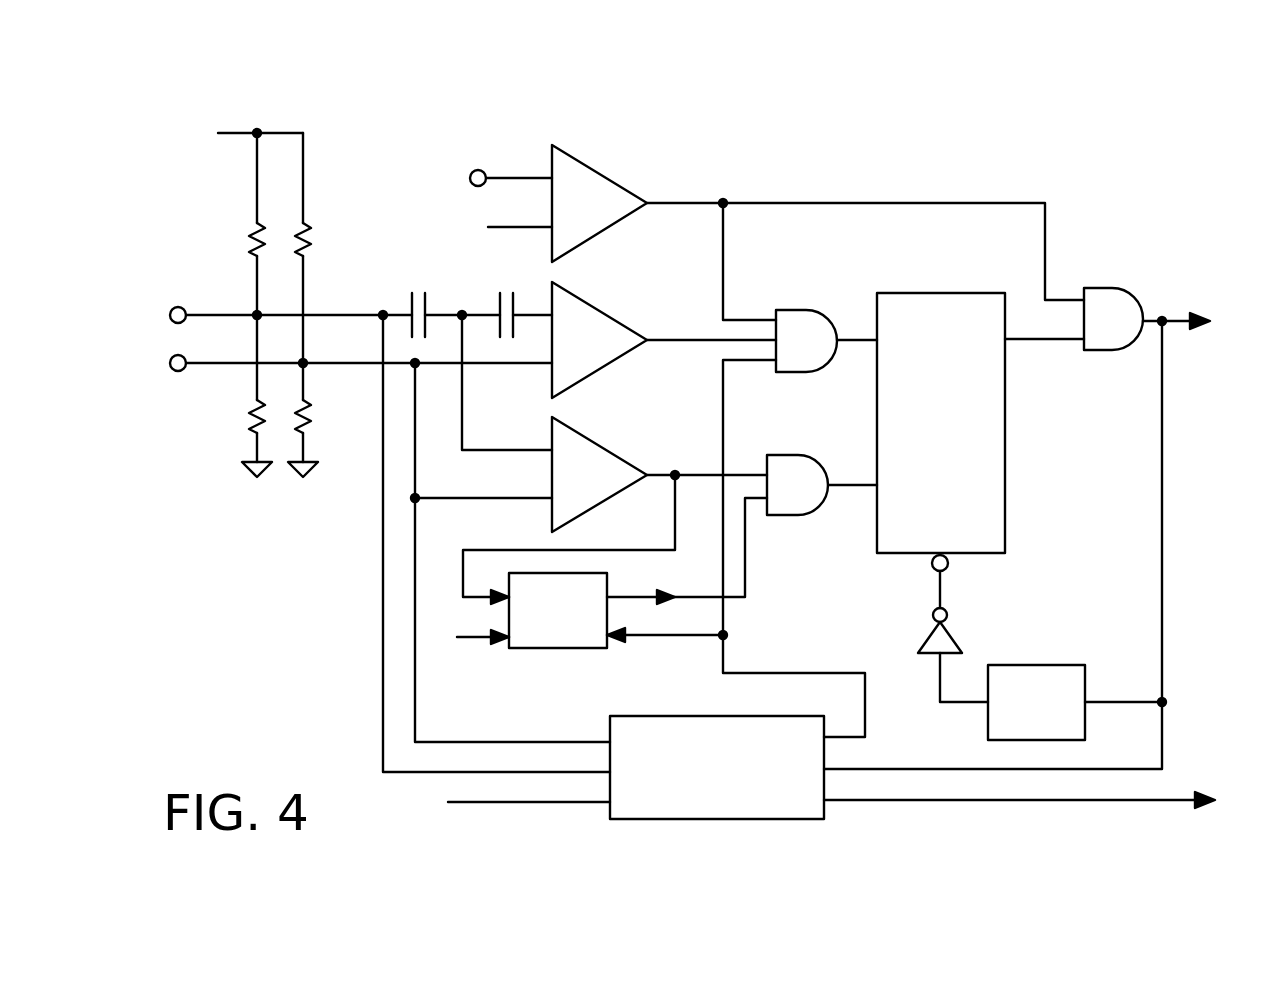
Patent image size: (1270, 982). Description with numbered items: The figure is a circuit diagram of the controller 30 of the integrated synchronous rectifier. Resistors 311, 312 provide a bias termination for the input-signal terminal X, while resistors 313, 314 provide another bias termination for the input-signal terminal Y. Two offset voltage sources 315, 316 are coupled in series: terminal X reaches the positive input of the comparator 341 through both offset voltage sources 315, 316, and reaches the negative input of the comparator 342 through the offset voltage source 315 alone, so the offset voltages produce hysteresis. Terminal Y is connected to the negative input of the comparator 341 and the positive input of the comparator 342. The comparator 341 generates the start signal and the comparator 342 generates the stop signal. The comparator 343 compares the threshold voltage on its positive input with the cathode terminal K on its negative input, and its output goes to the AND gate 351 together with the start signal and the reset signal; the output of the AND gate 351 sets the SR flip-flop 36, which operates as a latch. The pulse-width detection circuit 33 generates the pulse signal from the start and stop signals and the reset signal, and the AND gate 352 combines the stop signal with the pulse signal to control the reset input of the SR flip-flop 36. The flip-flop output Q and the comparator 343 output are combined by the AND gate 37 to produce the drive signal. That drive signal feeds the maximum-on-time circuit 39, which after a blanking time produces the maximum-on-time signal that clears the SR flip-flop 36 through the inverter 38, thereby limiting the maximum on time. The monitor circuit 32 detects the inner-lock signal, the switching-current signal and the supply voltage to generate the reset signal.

The controller 30 is at (1152, 133).
The resistor 311 is at (243, 231).
The resistor 312 is at (242, 408).
The resistor 313 is at (318, 231).
The resistor 314 is at (318, 408).
The offset voltage source 315 is at (413, 293).
The offset voltage source 316 is at (507, 293).
The comparator 341 is at (607, 370).
The comparator 342 is at (608, 505).
The comparator 343 is at (607, 232).
The AND gate 351 is at (802, 308).
The AND gate 352 is at (787, 447).
The SR flip-flop 36 is at (1007, 432).
The AND gate 37 is at (1108, 280).
The inverter 38 is at (912, 640).
The maximum-on-time circuit 39 is at (1043, 665).
The pulse-width detection circuit 33 is at (537, 653).
The monitor circuit 32 is at (692, 708).